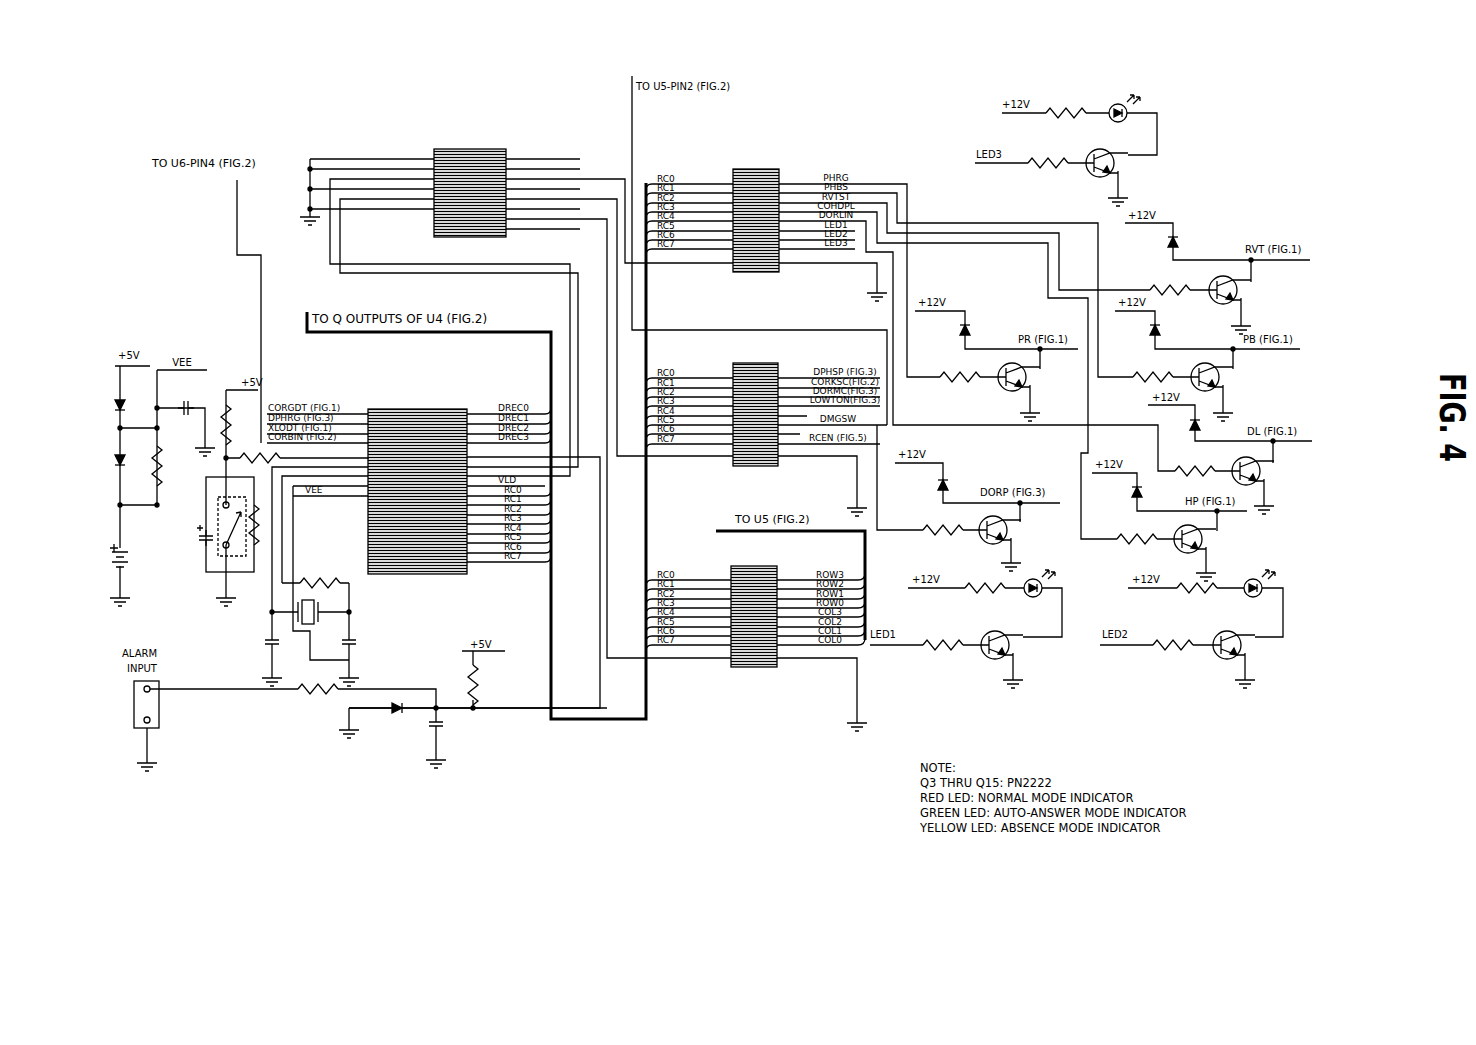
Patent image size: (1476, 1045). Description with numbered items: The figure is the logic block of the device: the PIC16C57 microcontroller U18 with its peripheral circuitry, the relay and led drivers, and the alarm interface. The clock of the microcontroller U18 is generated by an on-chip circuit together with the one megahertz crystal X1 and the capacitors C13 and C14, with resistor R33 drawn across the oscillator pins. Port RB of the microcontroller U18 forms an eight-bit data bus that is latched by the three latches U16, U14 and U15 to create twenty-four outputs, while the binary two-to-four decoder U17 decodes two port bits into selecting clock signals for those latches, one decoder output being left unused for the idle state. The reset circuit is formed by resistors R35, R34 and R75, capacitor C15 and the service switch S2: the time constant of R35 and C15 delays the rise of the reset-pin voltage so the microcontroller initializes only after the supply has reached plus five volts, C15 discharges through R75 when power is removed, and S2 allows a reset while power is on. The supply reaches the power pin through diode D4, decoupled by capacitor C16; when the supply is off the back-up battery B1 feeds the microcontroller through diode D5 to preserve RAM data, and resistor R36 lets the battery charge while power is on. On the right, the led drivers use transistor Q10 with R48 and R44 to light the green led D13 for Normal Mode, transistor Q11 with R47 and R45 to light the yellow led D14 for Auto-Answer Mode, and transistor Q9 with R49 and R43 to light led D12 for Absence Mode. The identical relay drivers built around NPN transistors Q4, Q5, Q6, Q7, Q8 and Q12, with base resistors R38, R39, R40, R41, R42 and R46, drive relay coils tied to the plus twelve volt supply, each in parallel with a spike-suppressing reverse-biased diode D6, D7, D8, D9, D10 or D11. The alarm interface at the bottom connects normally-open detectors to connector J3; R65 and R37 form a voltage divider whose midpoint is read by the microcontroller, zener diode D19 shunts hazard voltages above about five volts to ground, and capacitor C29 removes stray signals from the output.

The binary 2-to-4 decoder U17 is at (470, 194).
The PIC16C57 microcontroller U18 is at (418, 493).
The latch U16 is at (756, 222).
The latch U14 is at (756, 416).
The latch U15 is at (754, 618).
The diode D4 is at (124, 405).
The diode D5 is at (124, 465).
The resistor R36 is at (174, 466).
The back-up battery B1 is at (138, 550).
The capacitor C16 is at (186, 424).
The resistor R35 is at (231, 426).
The resistor R34 is at (297, 463).
The service switch S2 is at (230, 524).
The resistor R75 is at (263, 525).
The capacitor C15 is at (191, 547).
The resistor R33 is at (315, 578).
The clock crystal X1 is at (337, 616).
The capacitor C13 is at (242, 660).
The capacitor C14 is at (377, 660).
The connector J3 is at (197, 726).
The resistor R65 is at (314, 698).
The resistor R37 is at (498, 685).
The zener diode D19 is at (382, 724).
The capacitor C29 is at (462, 738).
The yellow led D14 is at (1123, 100).
The resistor R47 is at (1062, 120).
The resistor R45 is at (1047, 171).
The transistor Q11 is at (1098, 159).
The reverse-biased diode D7 is at (1194, 239).
The resistor R39 is at (1162, 285).
The NPN transistor Q5 is at (1237, 290).
The reverse-biased diode D6 is at (941, 338).
The resistor R38 is at (955, 384).
The NPN transistor Q4 is at (1027, 377).
The reverse-biased diode D8 is at (1132, 338).
The resistor R40 is at (1138, 384).
The NPN transistor Q6 is at (1221, 377).
The reverse-biased diode D10 is at (1182, 438).
The resistor R42 is at (1189, 478).
The NPN transistor Q8 is at (1262, 471).
The reverse-biased diode D9 is at (919, 486).
The resistor R41 is at (937, 538).
The NPN transistor Q7 is at (1009, 530).
The reverse-biased diode D11 is at (1114, 500).
The resistor R46 is at (1131, 546).
The transistor Q12 is at (1207, 539).
The resistor R49 is at (977, 595).
The led D12 is at (1039, 591).
The resistor R43 is at (938, 652).
The transistor Q9 is at (1006, 645).
The resistor R48 is at (1190, 595).
The green led D13 is at (1247, 595).
The resistor R44 is at (1168, 652).
The transistor Q10 is at (1242, 645).